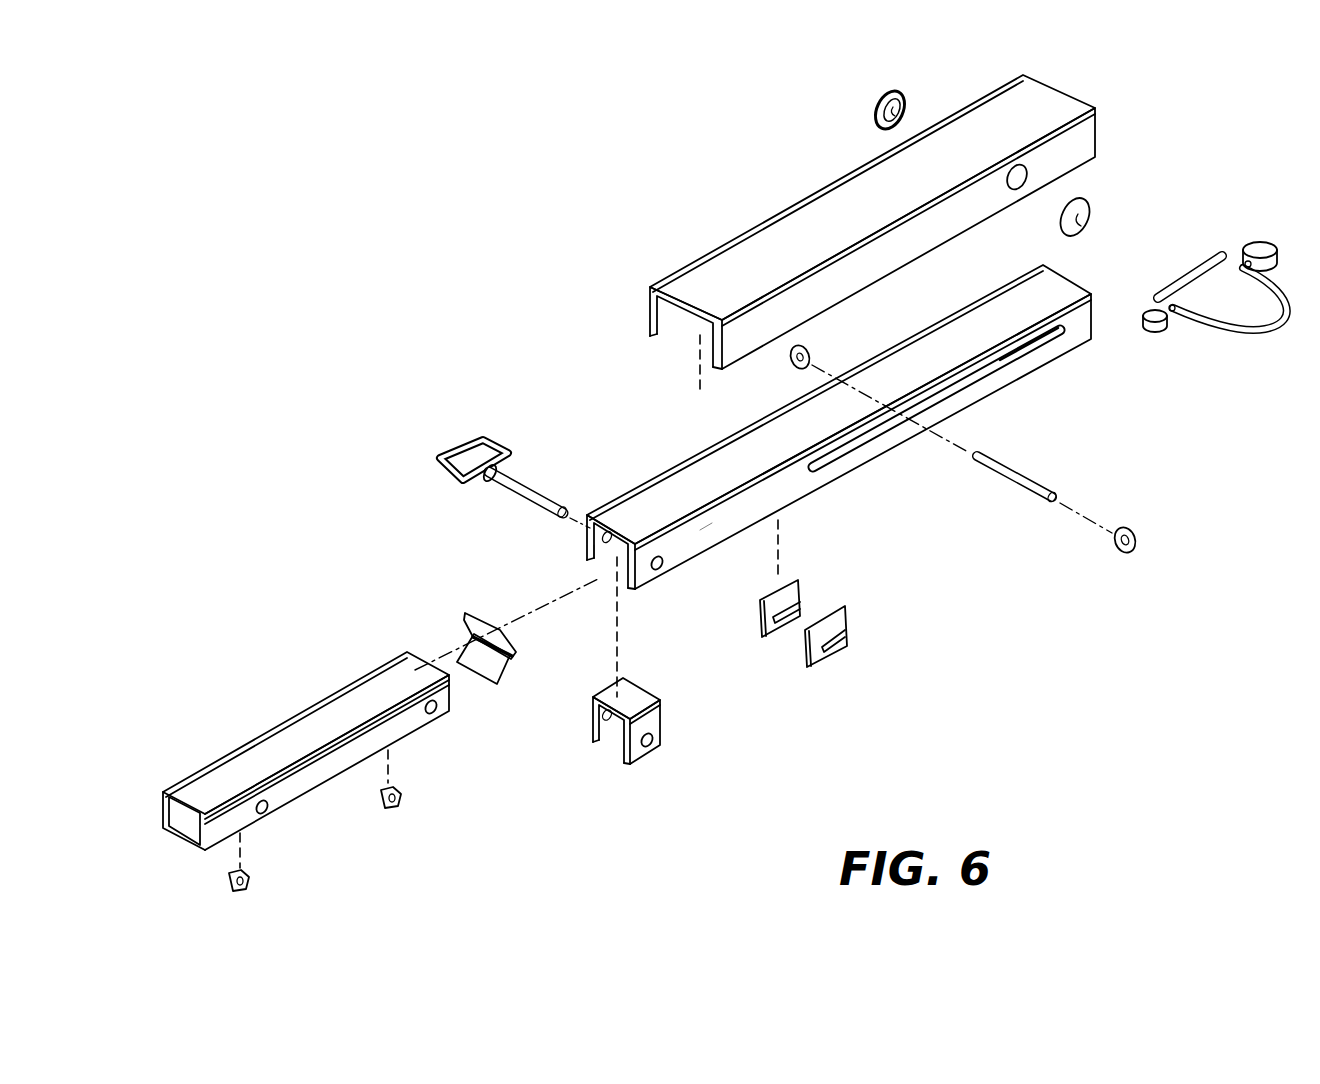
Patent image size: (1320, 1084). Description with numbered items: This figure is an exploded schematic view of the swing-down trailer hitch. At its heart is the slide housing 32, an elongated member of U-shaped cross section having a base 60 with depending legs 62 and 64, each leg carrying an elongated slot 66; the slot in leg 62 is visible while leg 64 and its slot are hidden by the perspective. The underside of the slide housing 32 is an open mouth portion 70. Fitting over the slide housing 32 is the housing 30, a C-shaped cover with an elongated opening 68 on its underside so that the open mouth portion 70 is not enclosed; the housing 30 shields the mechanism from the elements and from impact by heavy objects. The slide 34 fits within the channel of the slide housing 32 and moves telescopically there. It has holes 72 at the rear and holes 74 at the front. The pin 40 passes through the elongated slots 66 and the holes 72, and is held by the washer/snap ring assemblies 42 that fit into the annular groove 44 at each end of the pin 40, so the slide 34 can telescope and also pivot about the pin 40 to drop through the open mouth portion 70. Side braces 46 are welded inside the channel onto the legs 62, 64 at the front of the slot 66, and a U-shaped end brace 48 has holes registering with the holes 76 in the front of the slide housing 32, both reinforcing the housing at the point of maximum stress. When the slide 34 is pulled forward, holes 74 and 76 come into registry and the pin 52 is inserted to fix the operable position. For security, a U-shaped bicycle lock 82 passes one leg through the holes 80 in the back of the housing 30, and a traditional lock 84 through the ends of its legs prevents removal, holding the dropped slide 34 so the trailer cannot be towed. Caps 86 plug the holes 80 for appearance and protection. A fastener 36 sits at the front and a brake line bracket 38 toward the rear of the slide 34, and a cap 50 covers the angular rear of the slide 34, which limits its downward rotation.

The housing 30 is at (728, 263).
The slide housing 32 is at (698, 470).
The slide 34 is at (287, 737).
The fastener 36 is at (245, 884).
The brake line bracket 38 is at (395, 800).
The pin 40 is at (1003, 474).
The washer/snap ring assemblies 42 is at (812, 351).
The annular groove 44 is at (978, 454).
The side braces 46 is at (775, 638).
The end brace 48 is at (648, 753).
The cap 50 is at (487, 672).
The pin 52 is at (510, 472).
The base 60 is at (784, 436).
The leg 62 is at (708, 533).
The leg 64 is at (602, 561).
The elongated slot 66 is at (1020, 353).
The elongated opening 68 is at (697, 347).
The open mouth portion 70 is at (608, 574).
The holes 72 is at (437, 712).
The holes 74 is at (268, 812).
The holes 76 is at (660, 570).
The holes 80 is at (1027, 178).
The bicycle lock 82 is at (1240, 333).
The lock 84 is at (1256, 250).
The caps 86 is at (876, 114).